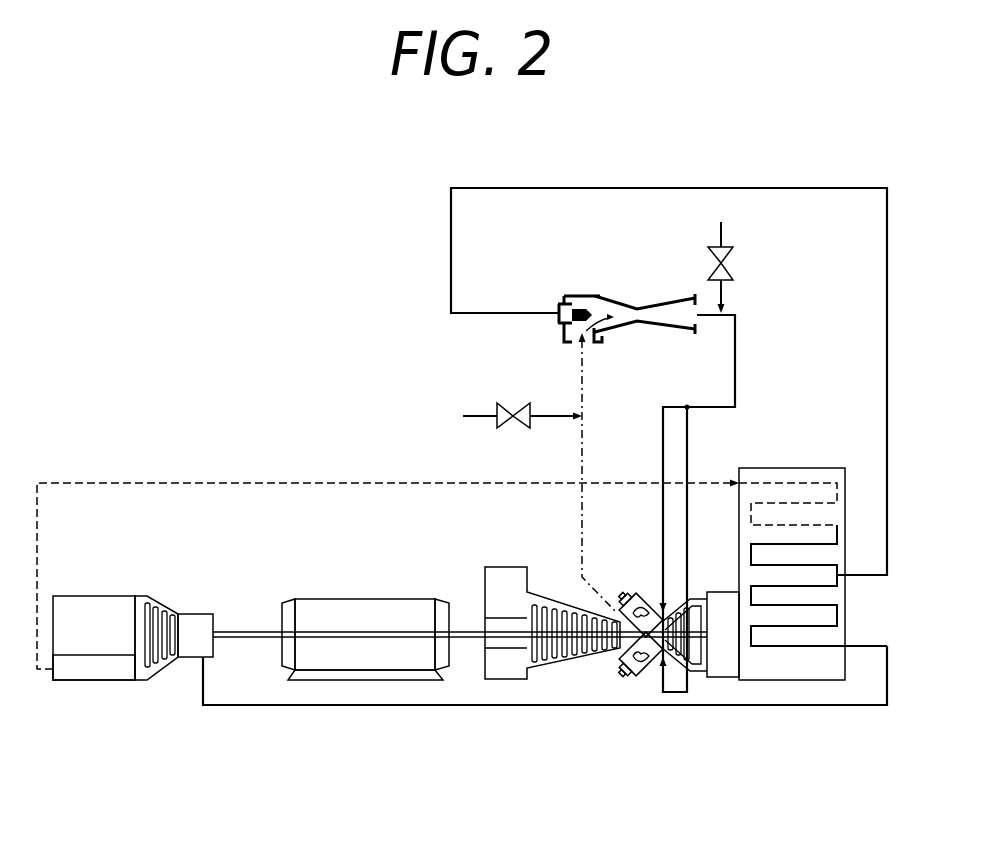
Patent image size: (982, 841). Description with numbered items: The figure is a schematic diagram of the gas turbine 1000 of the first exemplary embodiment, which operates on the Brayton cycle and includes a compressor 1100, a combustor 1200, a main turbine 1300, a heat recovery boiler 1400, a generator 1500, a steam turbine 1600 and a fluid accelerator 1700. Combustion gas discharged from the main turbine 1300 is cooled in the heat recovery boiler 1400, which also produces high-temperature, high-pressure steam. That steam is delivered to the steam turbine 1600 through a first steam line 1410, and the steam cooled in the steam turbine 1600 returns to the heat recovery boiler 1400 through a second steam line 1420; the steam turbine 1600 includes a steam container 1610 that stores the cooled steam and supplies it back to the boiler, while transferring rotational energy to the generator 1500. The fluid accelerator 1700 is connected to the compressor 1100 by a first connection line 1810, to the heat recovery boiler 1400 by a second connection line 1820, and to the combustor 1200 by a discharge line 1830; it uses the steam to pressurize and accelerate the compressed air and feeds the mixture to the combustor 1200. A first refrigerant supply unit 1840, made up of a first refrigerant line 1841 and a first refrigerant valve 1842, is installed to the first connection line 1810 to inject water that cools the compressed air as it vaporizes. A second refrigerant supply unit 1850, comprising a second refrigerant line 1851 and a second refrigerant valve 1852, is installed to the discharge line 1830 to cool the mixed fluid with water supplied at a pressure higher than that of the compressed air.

The gas turbine 1000 is at (312, 153).
The compressor 1100 is at (562, 664).
The combustor 1200 is at (645, 662).
The main turbine 1300 is at (712, 655).
The heat recovery boiler 1400 is at (803, 467).
The first steam line 1410 is at (357, 706).
The second steam line 1420 is at (268, 483).
The generator 1500 is at (360, 612).
The steam turbine 1600 is at (103, 603).
The steam container 1610 is at (90, 670).
The fluid accelerator 1700 is at (641, 290).
The first connection line 1810 is at (582, 510).
The second connection line 1820 is at (545, 188).
The discharge line 1830 is at (737, 343).
The first refrigerant supply unit 1840 is at (493, 383).
The first refrigerant line 1841 is at (477, 415).
The first refrigerant valve 1842 is at (508, 424).
The second refrigerant supply unit 1850 is at (745, 260).
The second refrigerant line 1851 is at (722, 230).
The second refrigerant valve 1852 is at (725, 278).